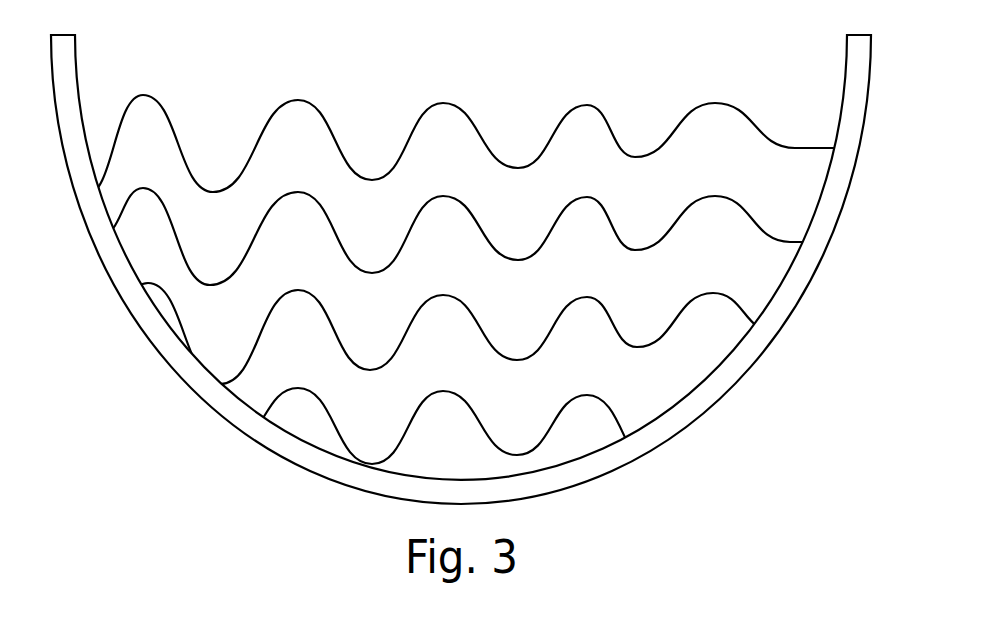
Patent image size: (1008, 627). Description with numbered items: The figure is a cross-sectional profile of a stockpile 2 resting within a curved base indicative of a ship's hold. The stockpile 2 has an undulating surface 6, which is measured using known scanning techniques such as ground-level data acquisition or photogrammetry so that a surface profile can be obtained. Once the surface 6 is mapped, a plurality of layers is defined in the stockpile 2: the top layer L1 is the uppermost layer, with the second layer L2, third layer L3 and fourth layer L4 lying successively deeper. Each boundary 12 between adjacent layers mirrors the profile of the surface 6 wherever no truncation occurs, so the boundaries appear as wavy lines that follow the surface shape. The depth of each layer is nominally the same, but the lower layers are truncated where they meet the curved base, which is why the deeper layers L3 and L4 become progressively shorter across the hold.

The stockpile 2 is at (519, 54).
The surface 6 is at (303, 98).
The boundary 12 is at (150, 190).
The top layer L1 is at (467, 121).
The second layer L2 is at (475, 194).
The third layer L3 is at (458, 360).
The fourth layer L4 is at (458, 453).